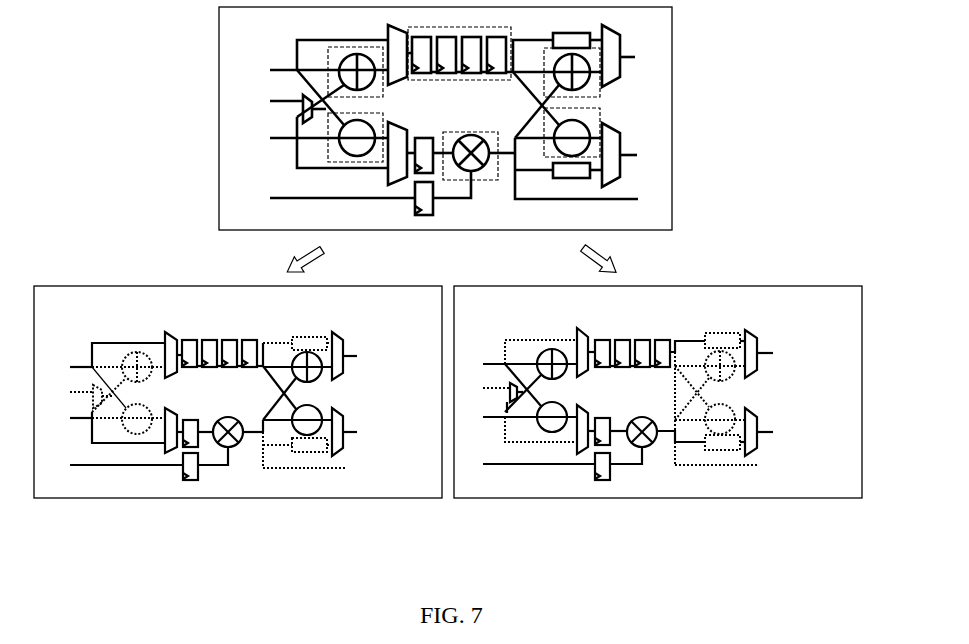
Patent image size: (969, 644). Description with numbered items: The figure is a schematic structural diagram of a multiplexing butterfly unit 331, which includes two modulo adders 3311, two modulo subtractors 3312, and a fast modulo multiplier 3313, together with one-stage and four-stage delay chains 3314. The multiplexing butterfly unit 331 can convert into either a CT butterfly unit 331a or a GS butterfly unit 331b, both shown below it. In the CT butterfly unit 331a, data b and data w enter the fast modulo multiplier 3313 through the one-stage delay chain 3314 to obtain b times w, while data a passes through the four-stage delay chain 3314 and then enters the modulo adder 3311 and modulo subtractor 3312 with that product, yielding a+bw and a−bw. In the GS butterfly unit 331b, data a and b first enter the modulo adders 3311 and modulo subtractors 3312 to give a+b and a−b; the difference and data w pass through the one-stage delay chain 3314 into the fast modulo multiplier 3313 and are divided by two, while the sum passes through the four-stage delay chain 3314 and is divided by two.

The multiplexing butterfly unit 331 is at (457, 138).
The modulo adder 3311 is at (437, 56).
The modulo subtractor 3312 is at (458, 123).
The fast modulo multiplier 3313 is at (603, 195).
The delay chain 3314 is at (462, 226).
The CT butterfly unit 331a is at (238, 356).
The GS butterfly unit 331b is at (658, 350).